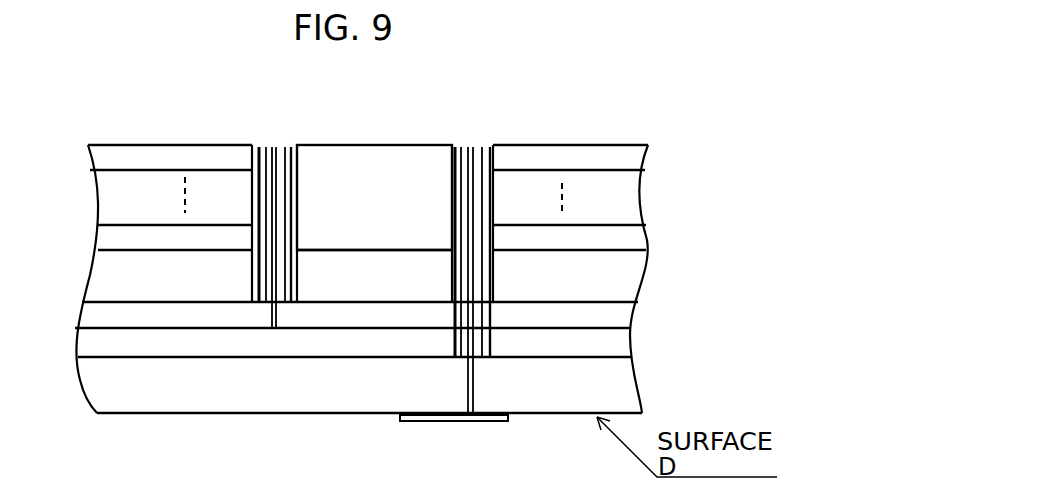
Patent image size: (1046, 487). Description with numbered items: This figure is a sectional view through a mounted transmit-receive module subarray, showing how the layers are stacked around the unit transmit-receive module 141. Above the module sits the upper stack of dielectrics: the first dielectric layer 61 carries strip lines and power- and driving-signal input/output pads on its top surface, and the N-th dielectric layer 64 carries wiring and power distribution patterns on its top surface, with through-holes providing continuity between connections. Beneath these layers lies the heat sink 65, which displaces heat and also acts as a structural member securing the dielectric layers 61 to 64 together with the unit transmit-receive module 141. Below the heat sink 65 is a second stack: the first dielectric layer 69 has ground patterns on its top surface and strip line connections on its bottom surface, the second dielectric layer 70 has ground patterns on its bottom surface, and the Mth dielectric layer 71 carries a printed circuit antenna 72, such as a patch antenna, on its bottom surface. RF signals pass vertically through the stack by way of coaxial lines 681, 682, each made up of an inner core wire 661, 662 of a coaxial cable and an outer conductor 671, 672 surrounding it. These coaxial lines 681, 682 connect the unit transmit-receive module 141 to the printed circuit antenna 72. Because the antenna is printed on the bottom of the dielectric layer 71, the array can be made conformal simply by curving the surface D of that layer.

The first dielectric layer 61 is at (88, 156).
The N-th dielectric layer 64 is at (97, 238).
The heat sink 65 is at (93, 280).
The first dielectric layer 69 is at (82, 313).
The second dielectric layer 70 is at (85, 348).
The Mth dielectric layer 71 is at (108, 380).
The inner core wire 661 is at (272, 147).
The outer conductor 671 is at (244, 206).
The coaxial line 681 is at (210, 204).
The inner core wire 662 is at (470, 147).
The outer conductor 672 is at (482, 147).
The coaxial line 682 is at (538, 246).
The unit transmit-receive module 141 is at (393, 145).
The printed circuit antenna 72 is at (478, 422).